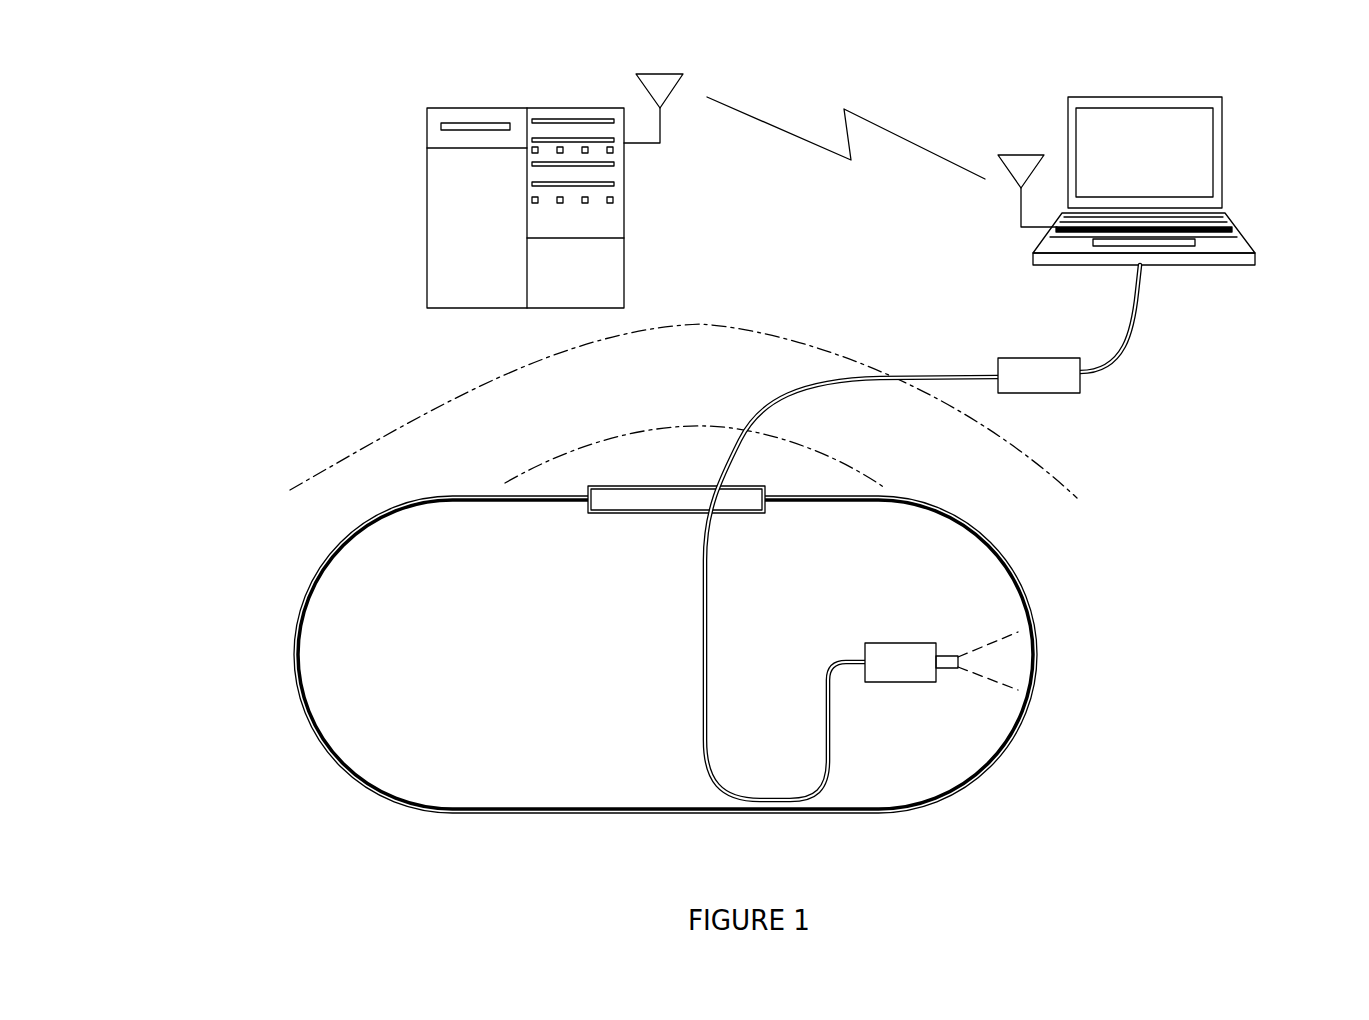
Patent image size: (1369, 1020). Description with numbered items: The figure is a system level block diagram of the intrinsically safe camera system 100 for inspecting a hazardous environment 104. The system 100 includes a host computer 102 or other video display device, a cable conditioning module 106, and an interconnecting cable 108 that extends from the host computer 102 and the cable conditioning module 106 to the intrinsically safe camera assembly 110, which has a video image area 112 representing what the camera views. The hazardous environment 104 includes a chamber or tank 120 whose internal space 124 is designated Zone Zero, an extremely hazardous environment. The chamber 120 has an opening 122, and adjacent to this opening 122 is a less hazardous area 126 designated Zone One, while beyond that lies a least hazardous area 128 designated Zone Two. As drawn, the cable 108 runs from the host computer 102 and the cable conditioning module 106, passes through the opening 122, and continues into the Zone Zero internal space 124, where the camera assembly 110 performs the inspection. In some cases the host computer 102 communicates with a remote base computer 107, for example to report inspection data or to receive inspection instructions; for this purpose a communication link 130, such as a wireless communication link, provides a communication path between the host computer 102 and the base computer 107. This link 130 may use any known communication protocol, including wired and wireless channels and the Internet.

The intrinsically safe camera system 100 is at (250, 377).
The host computer 102 is at (1236, 290).
The hazardous environment 104 is at (1195, 145).
The cable conditioning module 106 is at (1033, 393).
The remote base computer 107 is at (398, 186).
The interconnecting cable 108 is at (910, 377).
The intrinsically safe camera assembly 110 is at (907, 643).
The video image area 112 is at (1010, 667).
The chamber or tank 120 is at (492, 815).
The opening 122 is at (625, 502).
The internal space 124 is at (357, 653).
The less hazardous area 126 is at (775, 465).
The least hazardous area 128 is at (567, 382).
The communication link 130 is at (917, 145).